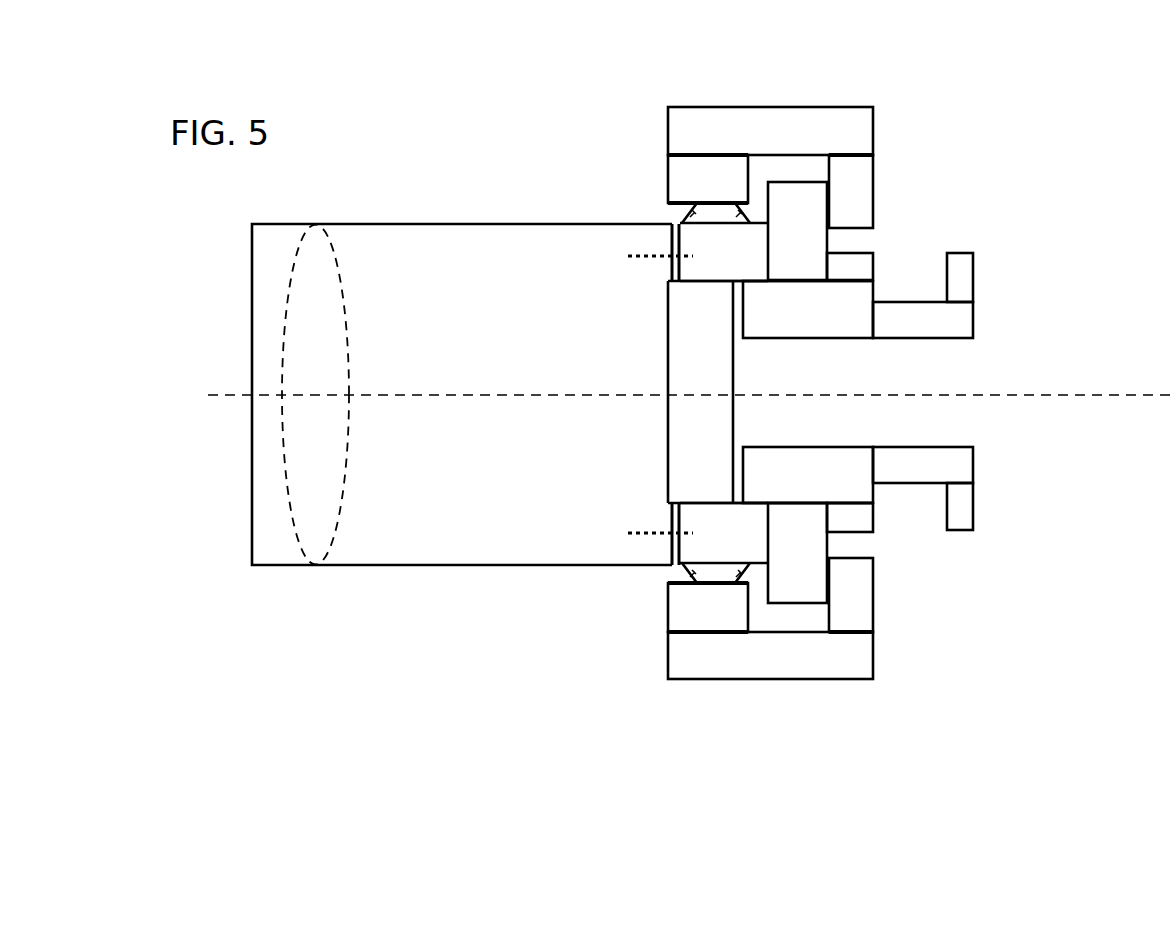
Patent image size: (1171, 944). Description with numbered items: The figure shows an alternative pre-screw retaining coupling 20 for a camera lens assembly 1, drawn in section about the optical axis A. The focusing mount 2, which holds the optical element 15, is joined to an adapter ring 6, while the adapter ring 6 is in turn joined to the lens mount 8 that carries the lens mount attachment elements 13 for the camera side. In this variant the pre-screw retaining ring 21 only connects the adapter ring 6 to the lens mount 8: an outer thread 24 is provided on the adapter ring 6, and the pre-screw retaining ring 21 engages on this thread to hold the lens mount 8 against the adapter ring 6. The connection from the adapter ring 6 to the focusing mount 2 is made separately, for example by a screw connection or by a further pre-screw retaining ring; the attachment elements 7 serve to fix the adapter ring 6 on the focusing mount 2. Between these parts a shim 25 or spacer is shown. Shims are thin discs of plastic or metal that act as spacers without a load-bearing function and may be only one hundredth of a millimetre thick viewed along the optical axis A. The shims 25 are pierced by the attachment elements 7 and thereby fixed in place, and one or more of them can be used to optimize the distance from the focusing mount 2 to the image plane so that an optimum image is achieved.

The camera lens assembly 1 is at (533, 172).
The focusing mount 2 is at (363, 284).
The adapter ring 6 is at (724, 537).
The attachment elements 7 is at (668, 256).
The lens mount 8 is at (900, 463).
The lens mount attachment elements 13 is at (965, 517).
The optical element 15 is at (323, 535).
The pre-screw retaining coupling 20 is at (833, 706).
The pre-screw retaining ring 21 is at (690, 657).
The threaded connection of the pre-screw retaining ring to the adapter ring 24 is at (660, 213).
The shim 25 is at (679, 563).
The optical axis A is at (664, 397).